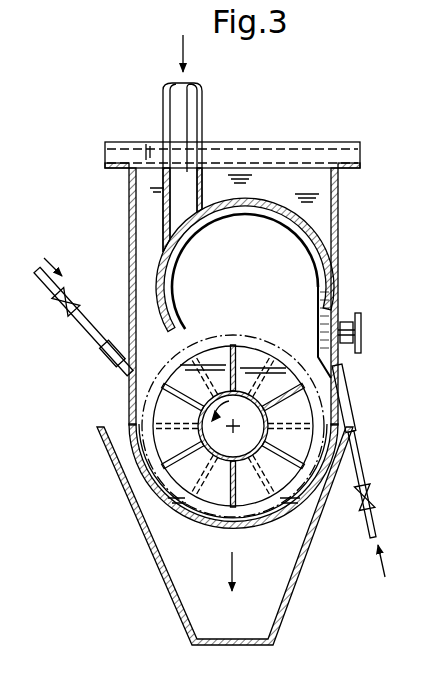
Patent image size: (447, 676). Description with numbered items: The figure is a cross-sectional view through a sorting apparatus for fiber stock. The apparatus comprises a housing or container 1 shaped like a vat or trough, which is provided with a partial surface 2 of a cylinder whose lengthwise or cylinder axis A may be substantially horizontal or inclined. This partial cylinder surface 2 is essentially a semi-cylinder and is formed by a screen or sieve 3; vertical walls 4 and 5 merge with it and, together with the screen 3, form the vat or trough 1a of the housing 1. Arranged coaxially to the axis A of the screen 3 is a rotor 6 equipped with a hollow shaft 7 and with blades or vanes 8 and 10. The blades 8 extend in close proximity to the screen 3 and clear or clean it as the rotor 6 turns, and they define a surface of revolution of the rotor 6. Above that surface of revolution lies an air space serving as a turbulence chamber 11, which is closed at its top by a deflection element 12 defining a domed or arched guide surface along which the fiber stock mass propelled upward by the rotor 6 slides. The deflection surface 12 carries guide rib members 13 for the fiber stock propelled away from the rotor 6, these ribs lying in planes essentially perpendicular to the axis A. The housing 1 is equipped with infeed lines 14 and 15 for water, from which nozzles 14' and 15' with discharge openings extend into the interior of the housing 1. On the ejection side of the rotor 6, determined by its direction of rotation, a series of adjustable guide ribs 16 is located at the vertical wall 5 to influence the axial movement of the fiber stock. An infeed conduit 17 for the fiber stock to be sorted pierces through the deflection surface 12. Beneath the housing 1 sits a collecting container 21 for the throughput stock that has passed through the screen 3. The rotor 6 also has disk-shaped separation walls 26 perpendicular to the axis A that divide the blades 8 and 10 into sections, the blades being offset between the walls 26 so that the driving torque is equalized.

The housing 1 is at (128, 230).
The vat or trough 1a is at (167, 483).
The partial cylinder surface 2 is at (283, 507).
The screen 3 is at (298, 498).
The vertical wall 4 is at (129, 268).
The vertical wall 5 is at (339, 215).
The rotor 6 is at (255, 332).
The hollow shaft 7 is at (213, 498).
The blades 8 is at (226, 358).
The blades 10 is at (279, 390).
The turbulence chamber 11 is at (232, 243).
The deflection element 12 is at (243, 198).
The guide rib members 13 is at (276, 212).
The infeed line 14 is at (83, 317).
The nozzle 14' is at (102, 372).
The infeed line 15 is at (380, 504).
The nozzle 15' is at (372, 398).
The adjustable guide ribs 16 is at (319, 293).
The infeed conduit 17 is at (175, 102).
The collecting container 21 is at (283, 618).
The separation walls 26 is at (297, 412).
The lengthwise axis A is at (246, 483).